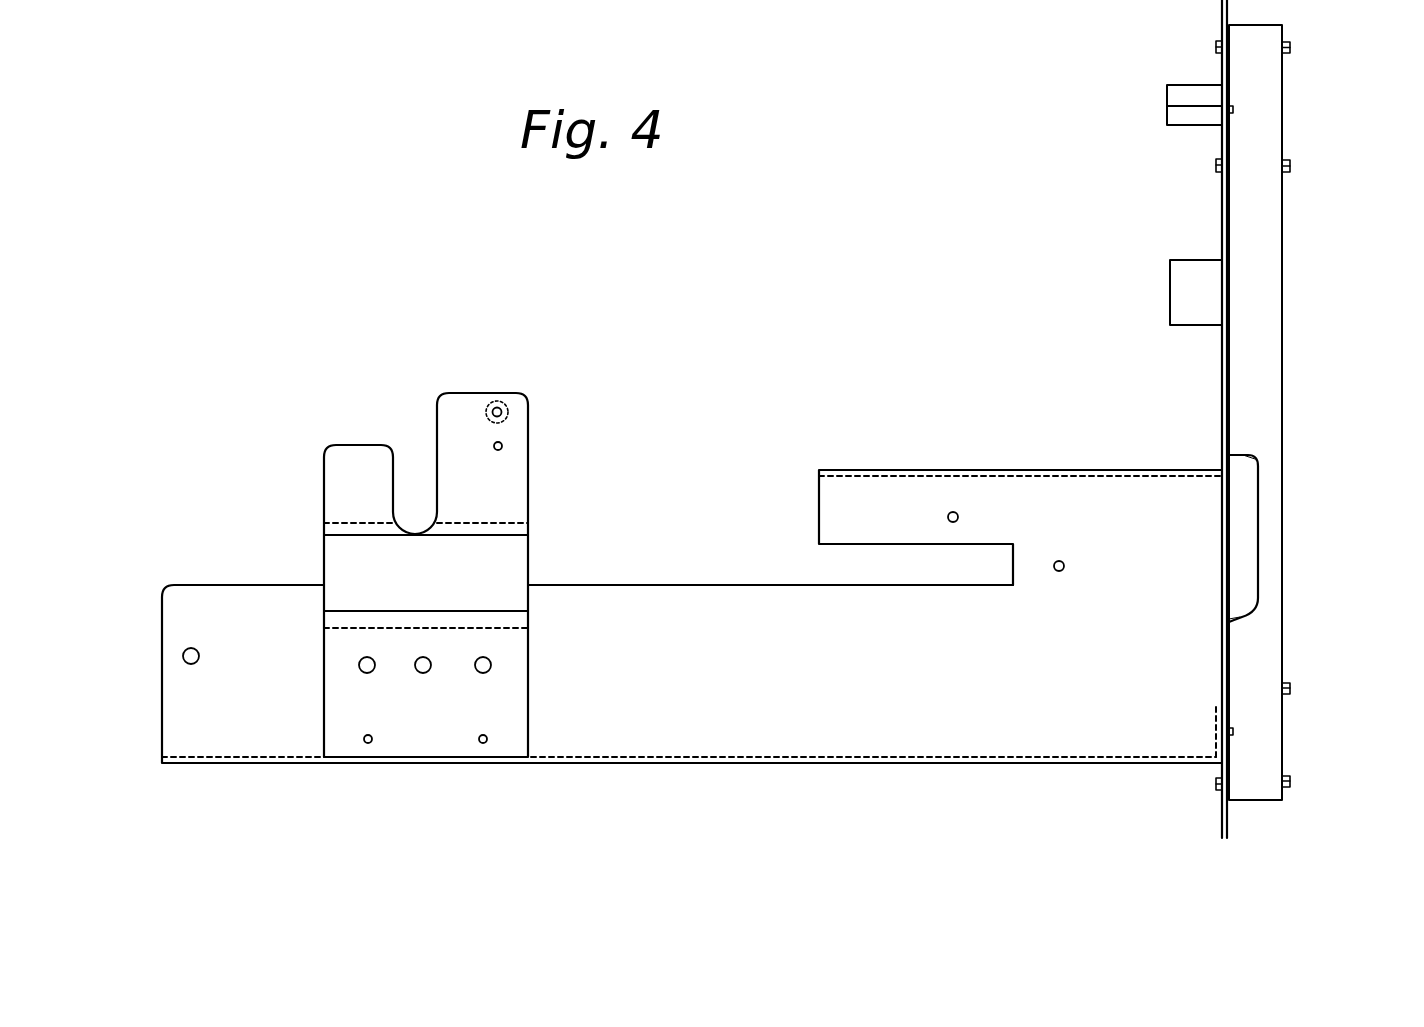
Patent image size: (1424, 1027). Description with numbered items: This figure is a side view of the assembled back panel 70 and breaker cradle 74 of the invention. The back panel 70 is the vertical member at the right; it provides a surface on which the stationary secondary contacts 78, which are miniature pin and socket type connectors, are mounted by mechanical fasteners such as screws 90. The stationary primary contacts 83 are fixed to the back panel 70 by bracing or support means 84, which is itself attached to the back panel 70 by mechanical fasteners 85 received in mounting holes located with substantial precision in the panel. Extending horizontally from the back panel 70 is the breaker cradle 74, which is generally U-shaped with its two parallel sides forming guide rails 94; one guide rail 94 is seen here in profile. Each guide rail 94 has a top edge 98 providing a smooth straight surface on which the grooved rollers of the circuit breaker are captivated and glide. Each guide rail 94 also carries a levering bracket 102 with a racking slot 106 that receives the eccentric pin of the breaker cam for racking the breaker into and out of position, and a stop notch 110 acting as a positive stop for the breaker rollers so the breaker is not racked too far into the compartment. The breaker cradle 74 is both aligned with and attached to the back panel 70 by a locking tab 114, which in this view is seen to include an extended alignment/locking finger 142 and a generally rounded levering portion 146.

The back panel 70 is at (1221, 220).
The breaker cradle 74 is at (245, 766).
The secondary contacts 78 is at (1180, 93).
The stationary primary contacts 83 is at (1178, 287).
The bracing or support means 84 is at (1270, 283).
The mechanical fasteners 85 is at (1292, 47).
The screws 90 is at (1212, 116).
The guide rail 94 is at (957, 712).
The top edge 98 is at (678, 585).
The levering bracket 102 is at (424, 728).
The racking slot 106 is at (416, 462).
The stop notch 110 is at (1015, 560).
The locking tab 114 is at (1255, 565).
The alignment/locking finger 142 is at (1253, 458).
The levering portion 146 is at (1232, 616).